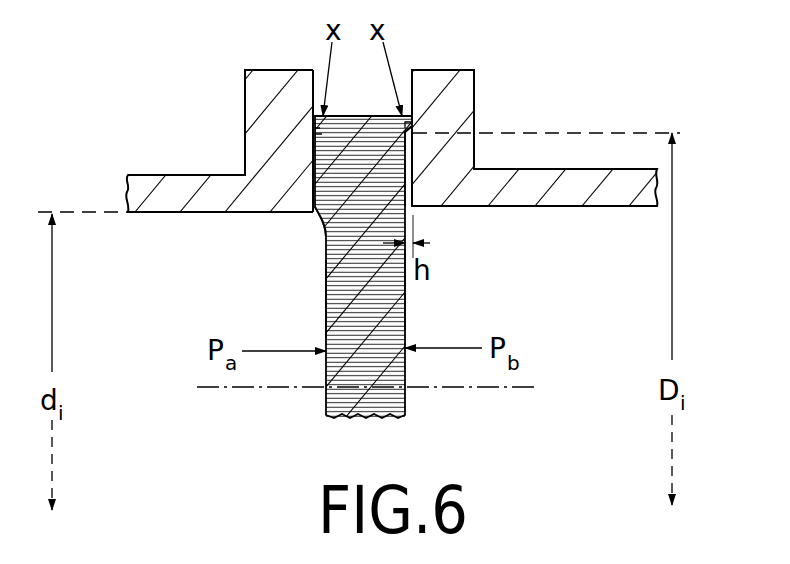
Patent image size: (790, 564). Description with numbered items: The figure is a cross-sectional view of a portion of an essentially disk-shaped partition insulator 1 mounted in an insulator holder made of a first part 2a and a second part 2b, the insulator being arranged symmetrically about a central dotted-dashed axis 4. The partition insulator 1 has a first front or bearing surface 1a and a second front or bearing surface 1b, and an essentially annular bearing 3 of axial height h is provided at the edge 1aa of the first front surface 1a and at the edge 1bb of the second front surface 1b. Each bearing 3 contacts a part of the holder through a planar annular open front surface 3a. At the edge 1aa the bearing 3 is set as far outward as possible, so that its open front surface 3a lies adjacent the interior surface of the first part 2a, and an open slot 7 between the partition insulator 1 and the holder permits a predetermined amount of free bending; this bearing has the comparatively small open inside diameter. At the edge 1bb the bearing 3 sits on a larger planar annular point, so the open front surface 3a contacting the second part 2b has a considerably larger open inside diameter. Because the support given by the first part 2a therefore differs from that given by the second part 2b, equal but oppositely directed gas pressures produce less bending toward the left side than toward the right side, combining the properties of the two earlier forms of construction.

The partition insulator 1 is at (408, 410).
The first front surface 1a is at (407, 312).
The edge of the first front surface 1aa is at (403, 156).
The second front surface 1b is at (326, 314).
The edge of the second front surface 1bb is at (315, 236).
The first part of the insulator holder 2a is at (287, 78).
The second part of the insulator holder 2b is at (435, 78).
The bearing 3 is at (313, 123).
The open front surface 3a is at (312, 148).
The central axis 4 is at (205, 388).
The open slot 7 is at (407, 178).